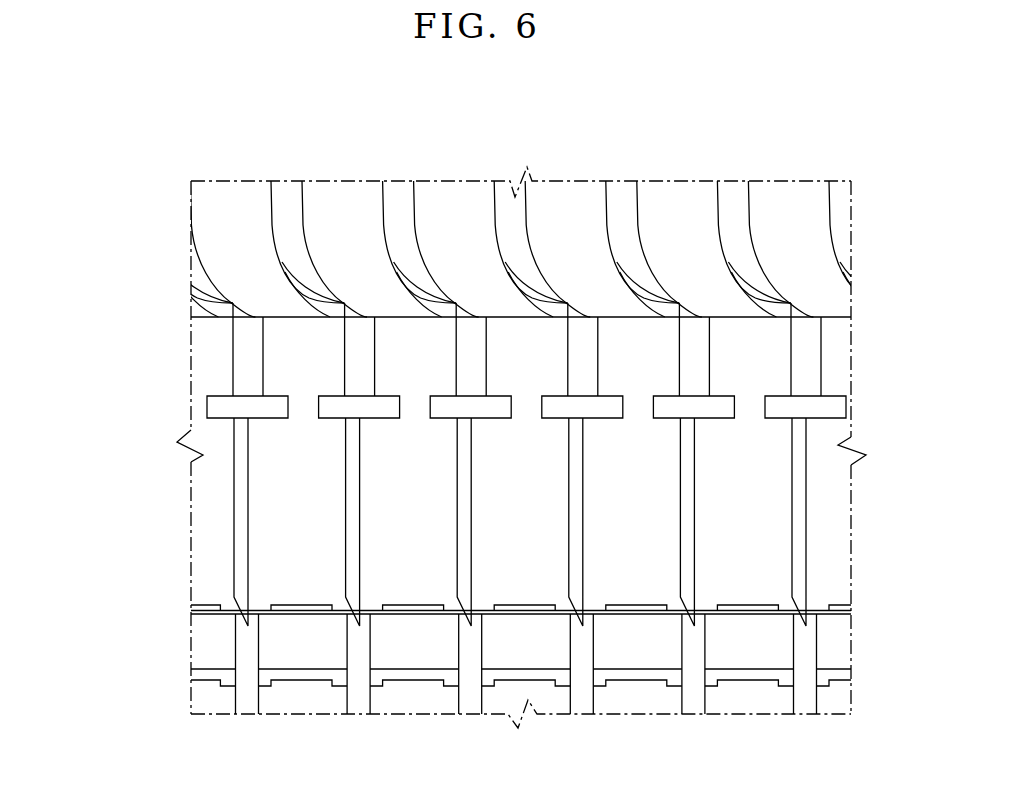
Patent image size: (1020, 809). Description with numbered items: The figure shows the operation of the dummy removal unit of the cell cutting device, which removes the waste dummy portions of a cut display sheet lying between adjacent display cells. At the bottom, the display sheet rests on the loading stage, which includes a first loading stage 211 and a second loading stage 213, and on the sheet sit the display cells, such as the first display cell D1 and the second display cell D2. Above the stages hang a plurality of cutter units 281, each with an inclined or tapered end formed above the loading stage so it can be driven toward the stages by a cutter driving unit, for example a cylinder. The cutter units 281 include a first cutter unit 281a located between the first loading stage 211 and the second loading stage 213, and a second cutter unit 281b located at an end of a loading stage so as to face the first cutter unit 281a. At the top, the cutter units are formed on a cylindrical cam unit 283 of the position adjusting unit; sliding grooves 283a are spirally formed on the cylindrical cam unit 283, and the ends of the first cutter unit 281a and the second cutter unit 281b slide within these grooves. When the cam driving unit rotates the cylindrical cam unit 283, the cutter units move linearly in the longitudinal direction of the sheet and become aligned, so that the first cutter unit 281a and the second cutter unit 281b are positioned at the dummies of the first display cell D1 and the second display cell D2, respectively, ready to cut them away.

The cylindrical cam unit 283 is at (672, 193).
The sliding groove 283a is at (627, 193).
The cutter unit 281 is at (103, 452).
The first cutter unit 281a is at (238, 466).
The second cutter unit 281b is at (353, 490).
The first display cell D1 is at (310, 605).
The second display cell D2 is at (418, 605).
The first loading stage 211 is at (310, 650).
The second loading stage 213 is at (410, 647).